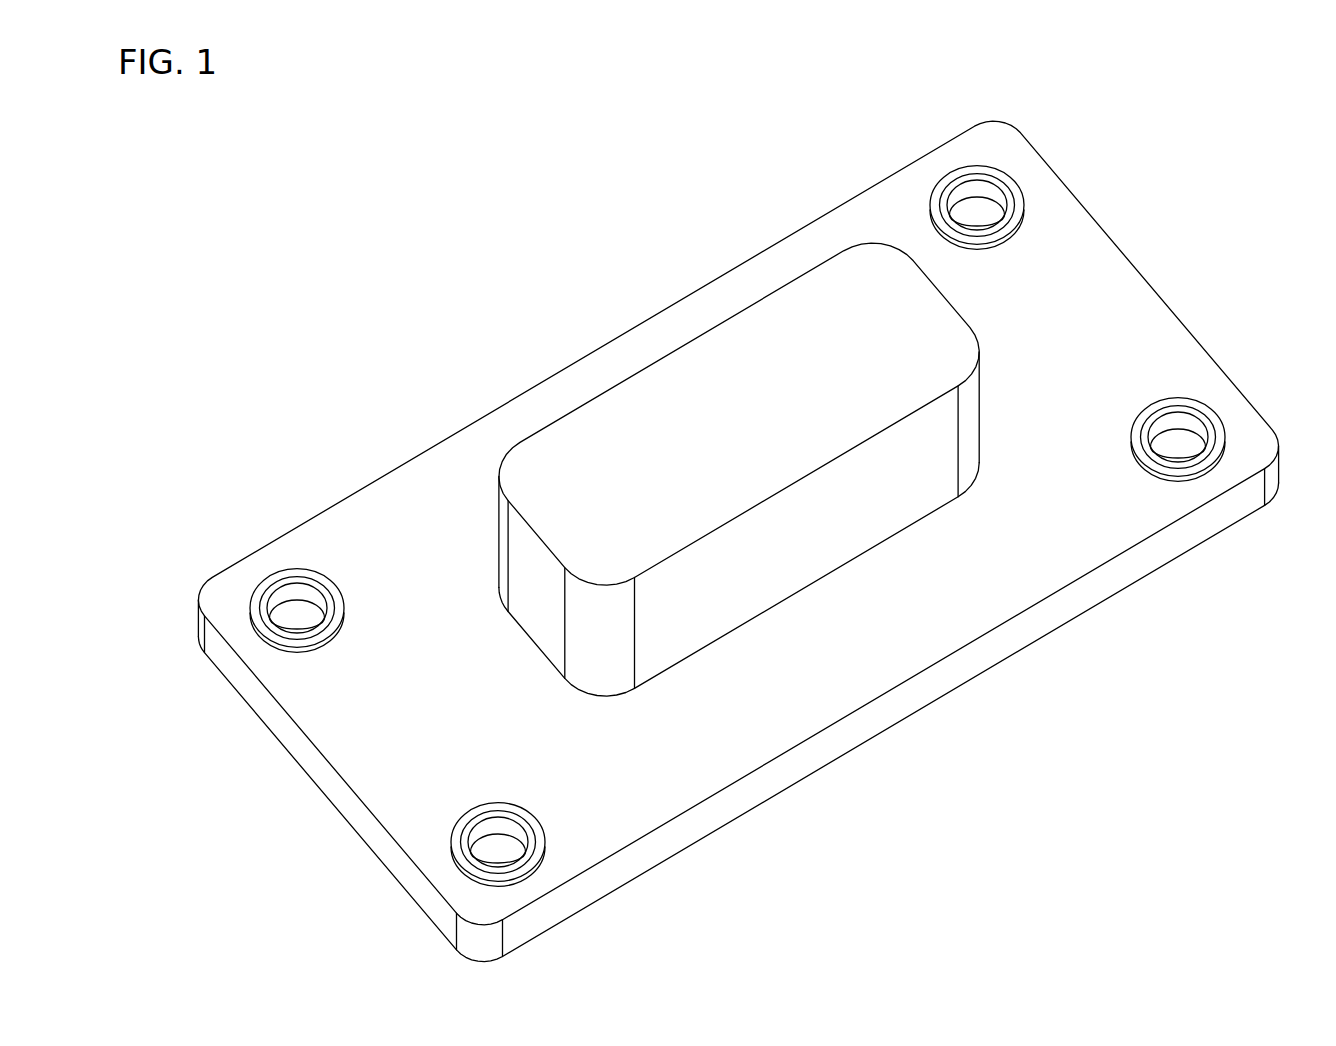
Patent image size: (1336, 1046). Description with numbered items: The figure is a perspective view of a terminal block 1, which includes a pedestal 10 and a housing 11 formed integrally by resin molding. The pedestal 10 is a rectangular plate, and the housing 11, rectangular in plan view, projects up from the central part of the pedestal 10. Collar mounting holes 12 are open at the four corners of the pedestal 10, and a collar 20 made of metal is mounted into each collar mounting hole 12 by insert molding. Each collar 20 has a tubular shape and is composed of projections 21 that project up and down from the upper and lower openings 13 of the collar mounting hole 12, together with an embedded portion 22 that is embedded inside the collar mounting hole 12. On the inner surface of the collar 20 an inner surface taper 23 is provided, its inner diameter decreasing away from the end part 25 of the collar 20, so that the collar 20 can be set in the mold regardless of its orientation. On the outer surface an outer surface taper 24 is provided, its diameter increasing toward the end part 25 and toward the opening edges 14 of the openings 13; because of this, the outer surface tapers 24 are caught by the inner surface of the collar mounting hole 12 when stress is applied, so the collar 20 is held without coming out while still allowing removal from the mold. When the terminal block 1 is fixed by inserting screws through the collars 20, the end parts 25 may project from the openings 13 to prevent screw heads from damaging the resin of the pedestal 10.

The terminal block 1 is at (360, 198).
The pedestal 10 is at (605, 368).
The housing 11 is at (710, 365).
The collar mounting hole 12 is at (295, 636).
The opening 13 is at (292, 625).
The opening edge 14 is at (323, 633).
The collar 20 is at (731, 524).
The projection 21 is at (928, 207).
The embedded portion 22 is at (1000, 193).
The inner surface taper 23 is at (985, 190).
The outer surface taper 24 is at (997, 244).
The end part 25 is at (942, 188).